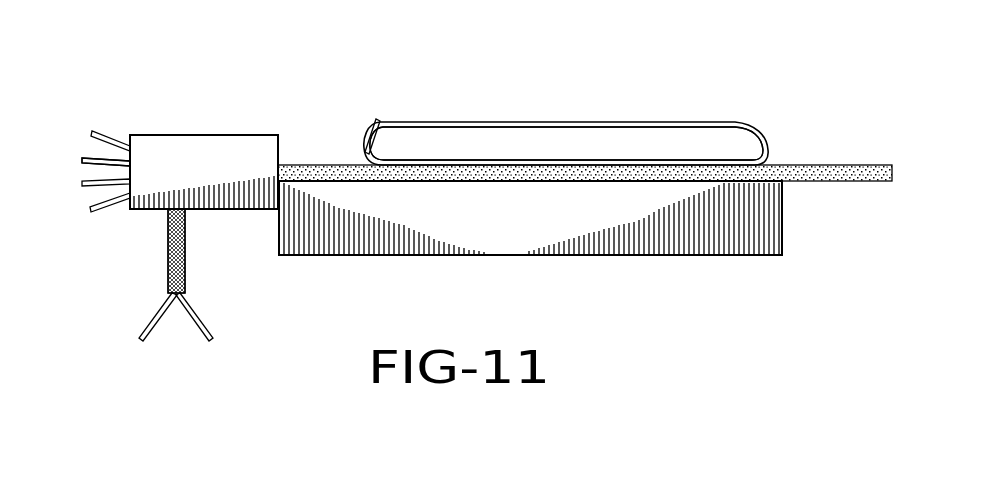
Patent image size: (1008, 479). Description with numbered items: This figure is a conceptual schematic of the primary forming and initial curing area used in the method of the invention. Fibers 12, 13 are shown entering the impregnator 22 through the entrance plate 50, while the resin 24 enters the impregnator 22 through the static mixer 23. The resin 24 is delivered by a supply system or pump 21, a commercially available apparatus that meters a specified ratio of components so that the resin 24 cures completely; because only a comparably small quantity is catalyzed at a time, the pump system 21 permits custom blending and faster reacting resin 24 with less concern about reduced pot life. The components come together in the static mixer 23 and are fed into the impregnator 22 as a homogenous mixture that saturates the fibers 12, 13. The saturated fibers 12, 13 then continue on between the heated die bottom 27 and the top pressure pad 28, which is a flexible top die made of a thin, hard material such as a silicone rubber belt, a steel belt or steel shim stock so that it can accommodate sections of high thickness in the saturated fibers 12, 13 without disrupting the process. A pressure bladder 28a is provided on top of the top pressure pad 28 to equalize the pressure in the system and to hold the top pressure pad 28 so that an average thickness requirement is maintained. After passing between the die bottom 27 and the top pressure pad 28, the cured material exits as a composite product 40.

The fibers 12 is at (102, 131).
The fibers 13 is at (106, 162).
The supply system or pump 21 is at (175, 326).
The impregnator 22 is at (205, 135).
The static mixer 23 is at (185, 258).
The resin 24 is at (168, 258).
The die bottom 27 is at (514, 208).
The top pressure pad 28 is at (501, 103).
The pressure bladder 28a is at (635, 122).
The composite product 40 is at (816, 165).
The entrance plate 50 is at (141, 210).